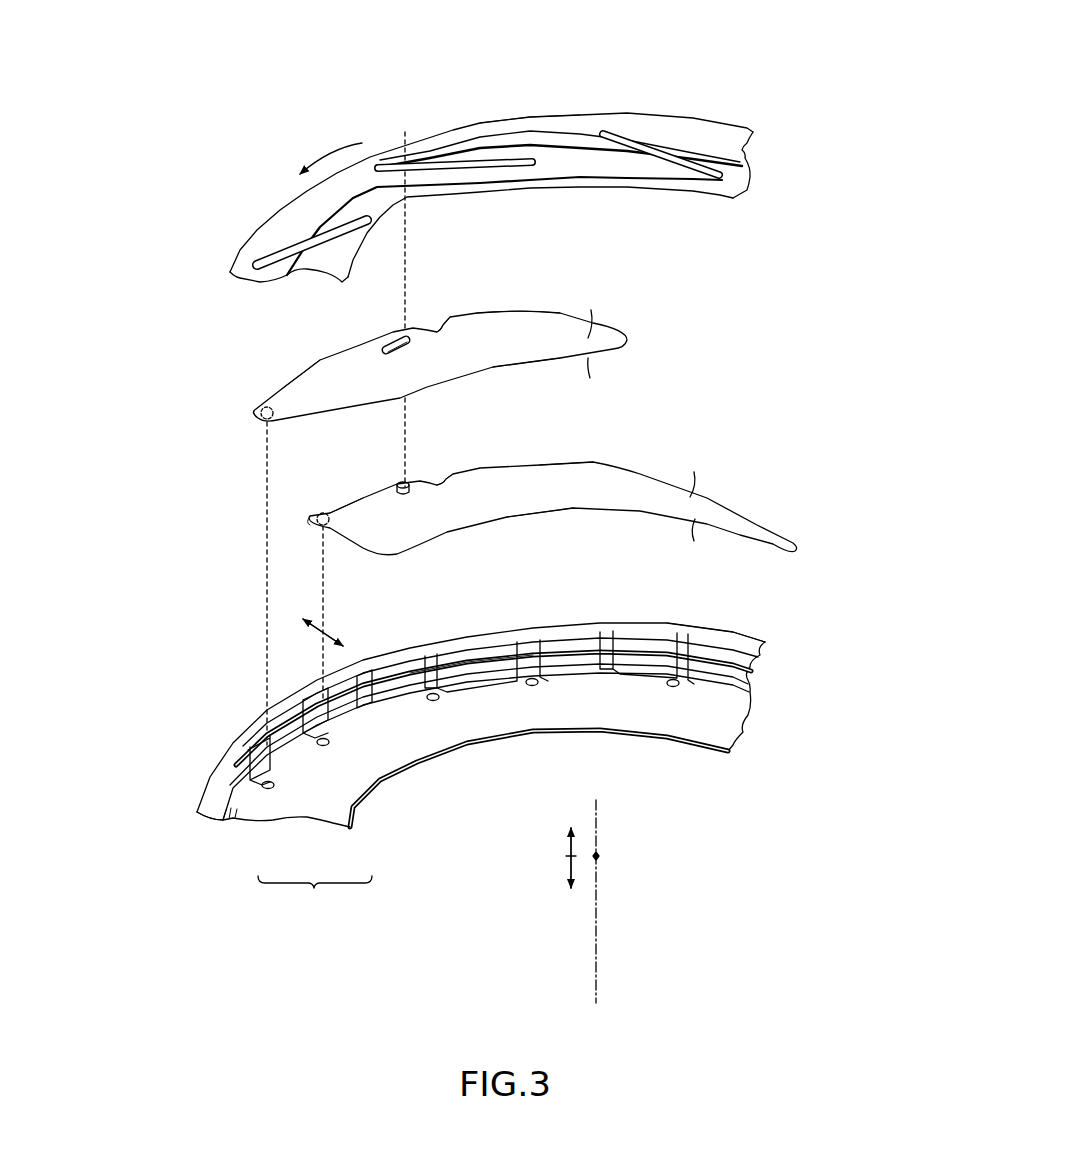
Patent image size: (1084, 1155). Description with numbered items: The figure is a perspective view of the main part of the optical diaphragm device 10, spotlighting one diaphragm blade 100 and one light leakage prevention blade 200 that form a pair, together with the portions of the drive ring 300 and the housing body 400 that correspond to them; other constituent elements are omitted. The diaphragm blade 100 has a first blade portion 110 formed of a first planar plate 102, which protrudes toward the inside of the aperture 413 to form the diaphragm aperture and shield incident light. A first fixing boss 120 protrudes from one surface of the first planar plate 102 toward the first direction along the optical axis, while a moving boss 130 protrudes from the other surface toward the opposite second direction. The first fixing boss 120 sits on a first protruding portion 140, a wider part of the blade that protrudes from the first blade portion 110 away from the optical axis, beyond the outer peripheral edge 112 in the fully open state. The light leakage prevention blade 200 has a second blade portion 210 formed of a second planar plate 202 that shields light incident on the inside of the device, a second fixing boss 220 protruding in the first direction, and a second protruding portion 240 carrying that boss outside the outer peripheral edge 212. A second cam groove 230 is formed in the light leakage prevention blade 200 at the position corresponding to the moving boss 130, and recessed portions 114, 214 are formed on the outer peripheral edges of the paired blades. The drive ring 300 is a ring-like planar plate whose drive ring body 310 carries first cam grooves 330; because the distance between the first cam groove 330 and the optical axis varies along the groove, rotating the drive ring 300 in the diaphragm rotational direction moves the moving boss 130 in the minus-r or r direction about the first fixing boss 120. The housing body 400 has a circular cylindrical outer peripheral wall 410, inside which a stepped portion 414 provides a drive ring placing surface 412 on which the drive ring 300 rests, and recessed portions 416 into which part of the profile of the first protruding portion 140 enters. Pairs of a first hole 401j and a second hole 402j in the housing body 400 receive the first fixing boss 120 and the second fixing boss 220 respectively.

The optical diaphragm device 10 is at (786, 61).
The diaphragm blade 100 is at (751, 485).
The first planar plate 102 is at (599, 453).
The first blade portion 110 is at (539, 517).
The outer peripheral edge 112 is at (351, 497).
The recessed portion 114 is at (434, 478).
The first fixing boss 120 is at (320, 528).
The moving boss 130 is at (397, 484).
The first protruding portion 140 is at (306, 511).
The light leakage prevention blade 200 is at (653, 342).
The second planar plate 202 is at (496, 305).
The second blade portion 210 is at (506, 369).
The outer peripheral edge 212 is at (287, 390).
The recessed portion 214 is at (440, 324).
The second fixing boss 220 is at (265, 427).
The second cam groove 230 is at (395, 342).
The second protruding portion 240 is at (249, 410).
The drive ring 300 is at (766, 163).
The drive ring body 310 is at (543, 125).
The first cam groove 330 is at (447, 134).
The housing body 400 is at (759, 625).
The outer peripheral wall 410 is at (628, 624).
The drive ring placing surface 412 is at (570, 672).
The aperture 413 is at (447, 825).
The stepped portion 414 is at (601, 680).
The recessed portion 416 is at (305, 732).
The first hole 401j is at (323, 748).
The second hole 402j is at (268, 792).